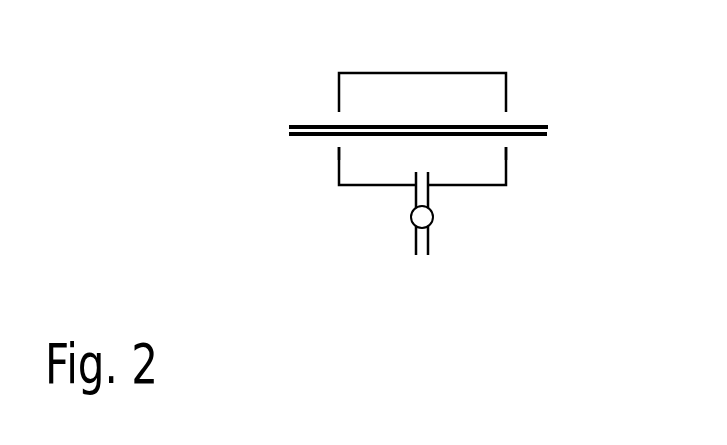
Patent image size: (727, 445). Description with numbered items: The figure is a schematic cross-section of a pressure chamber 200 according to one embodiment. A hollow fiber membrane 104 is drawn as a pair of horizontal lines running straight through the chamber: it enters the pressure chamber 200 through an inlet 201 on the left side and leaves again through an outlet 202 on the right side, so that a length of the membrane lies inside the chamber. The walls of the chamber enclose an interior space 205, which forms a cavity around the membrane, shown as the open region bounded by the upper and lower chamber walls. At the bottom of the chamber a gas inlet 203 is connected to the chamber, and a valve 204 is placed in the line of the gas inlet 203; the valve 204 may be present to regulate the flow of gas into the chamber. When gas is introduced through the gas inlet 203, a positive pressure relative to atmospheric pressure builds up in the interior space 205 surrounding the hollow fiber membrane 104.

The hollow fiber membrane 104 is at (527, 124).
The pressure chamber 200 is at (358, 188).
The inlet 201 is at (340, 143).
The outlet 202 is at (505, 140).
The gas inlet 203 is at (425, 253).
The valve 204 is at (430, 219).
The interior space 205 is at (362, 90).